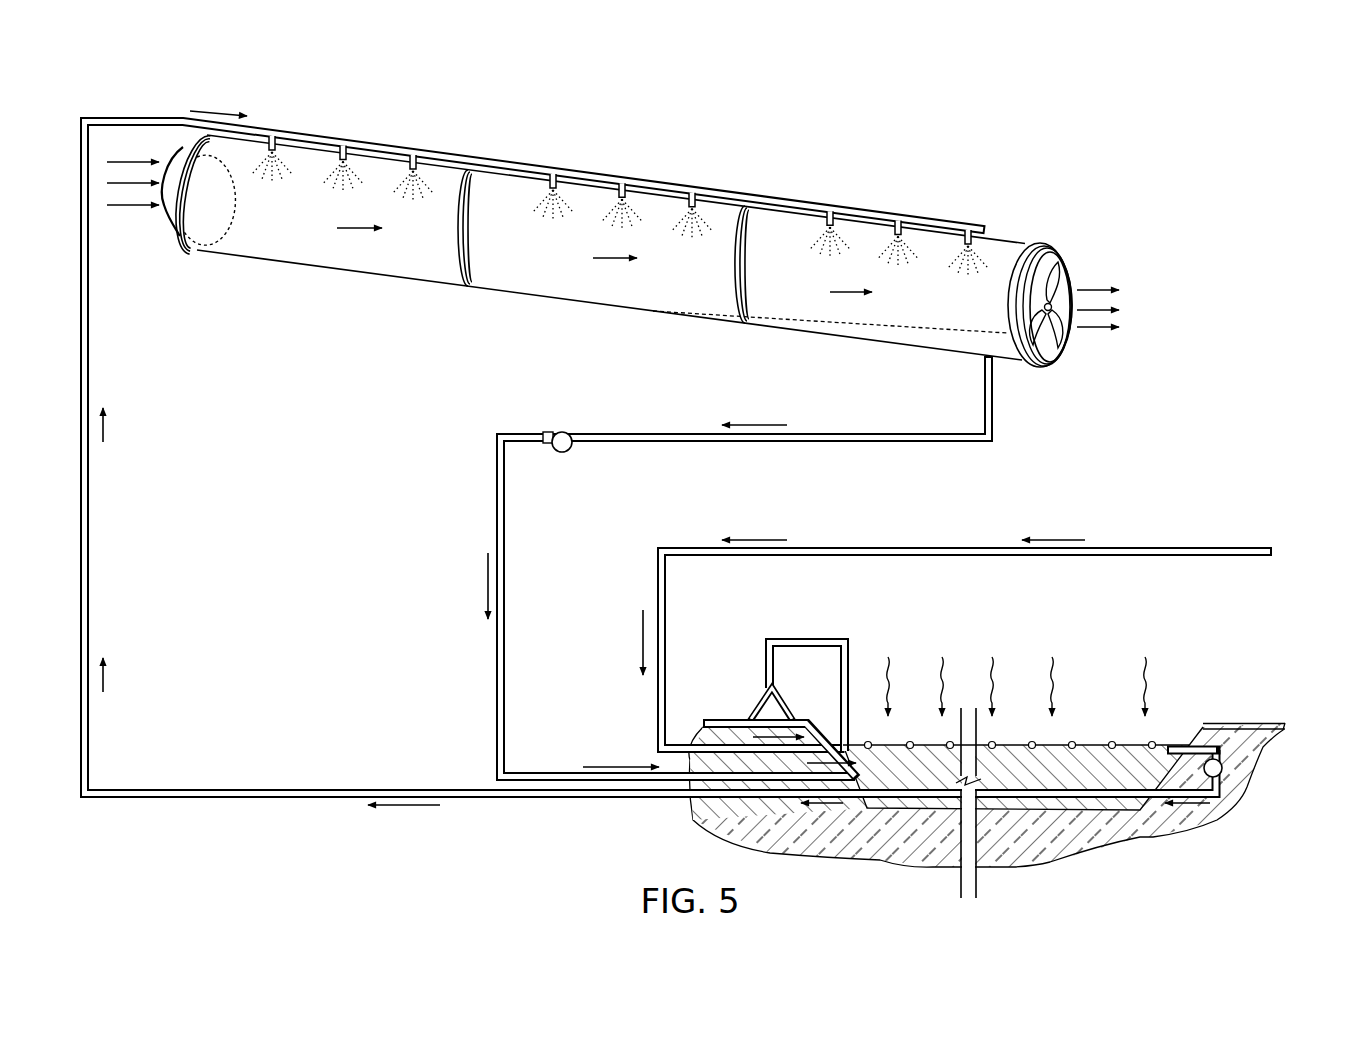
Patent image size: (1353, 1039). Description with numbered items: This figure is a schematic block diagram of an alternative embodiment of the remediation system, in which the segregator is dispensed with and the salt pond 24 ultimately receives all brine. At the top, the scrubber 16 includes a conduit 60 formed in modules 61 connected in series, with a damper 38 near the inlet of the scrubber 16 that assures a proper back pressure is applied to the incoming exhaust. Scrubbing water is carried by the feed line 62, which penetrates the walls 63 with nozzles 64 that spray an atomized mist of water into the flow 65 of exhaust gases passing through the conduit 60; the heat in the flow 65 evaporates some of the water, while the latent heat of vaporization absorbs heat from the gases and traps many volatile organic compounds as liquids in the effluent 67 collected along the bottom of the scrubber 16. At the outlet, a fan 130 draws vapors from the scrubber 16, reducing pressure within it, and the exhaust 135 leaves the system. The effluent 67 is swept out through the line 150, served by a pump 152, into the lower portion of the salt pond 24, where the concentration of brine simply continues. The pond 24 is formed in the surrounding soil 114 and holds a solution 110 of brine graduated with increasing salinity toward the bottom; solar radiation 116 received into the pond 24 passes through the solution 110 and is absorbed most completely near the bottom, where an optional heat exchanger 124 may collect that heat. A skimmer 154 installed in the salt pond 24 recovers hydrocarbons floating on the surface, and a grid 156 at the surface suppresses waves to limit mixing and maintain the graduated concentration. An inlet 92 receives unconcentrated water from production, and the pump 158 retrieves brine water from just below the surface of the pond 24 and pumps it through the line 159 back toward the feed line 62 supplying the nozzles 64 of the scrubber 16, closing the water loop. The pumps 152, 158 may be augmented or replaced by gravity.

The scrubber 16 is at (437, 110).
The salt pond 24 is at (1018, 727).
The damper 38 is at (212, 228).
The conduit 60 is at (540, 258).
The modules 61 is at (333, 125).
The feed line 62 is at (292, 133).
The walls 63 is at (365, 157).
The nozzles 64 is at (560, 183).
The flow 65 is at (617, 258).
The effluent 67 is at (920, 337).
The inlet 92 is at (1188, 552).
The solution 110 is at (1093, 757).
The surrounding soil 114 is at (1203, 818).
The solar radiation 116 is at (990, 672).
The heat exchanger 124 is at (1080, 800).
The fan 130 is at (1066, 255).
The exhaust 135 is at (1097, 286).
The line 150 is at (503, 490).
The pump 152 is at (560, 433).
The skimmer 154 is at (818, 640).
The grid 156 is at (1160, 745).
The pump 158 is at (1228, 760).
The line 159 is at (262, 792).